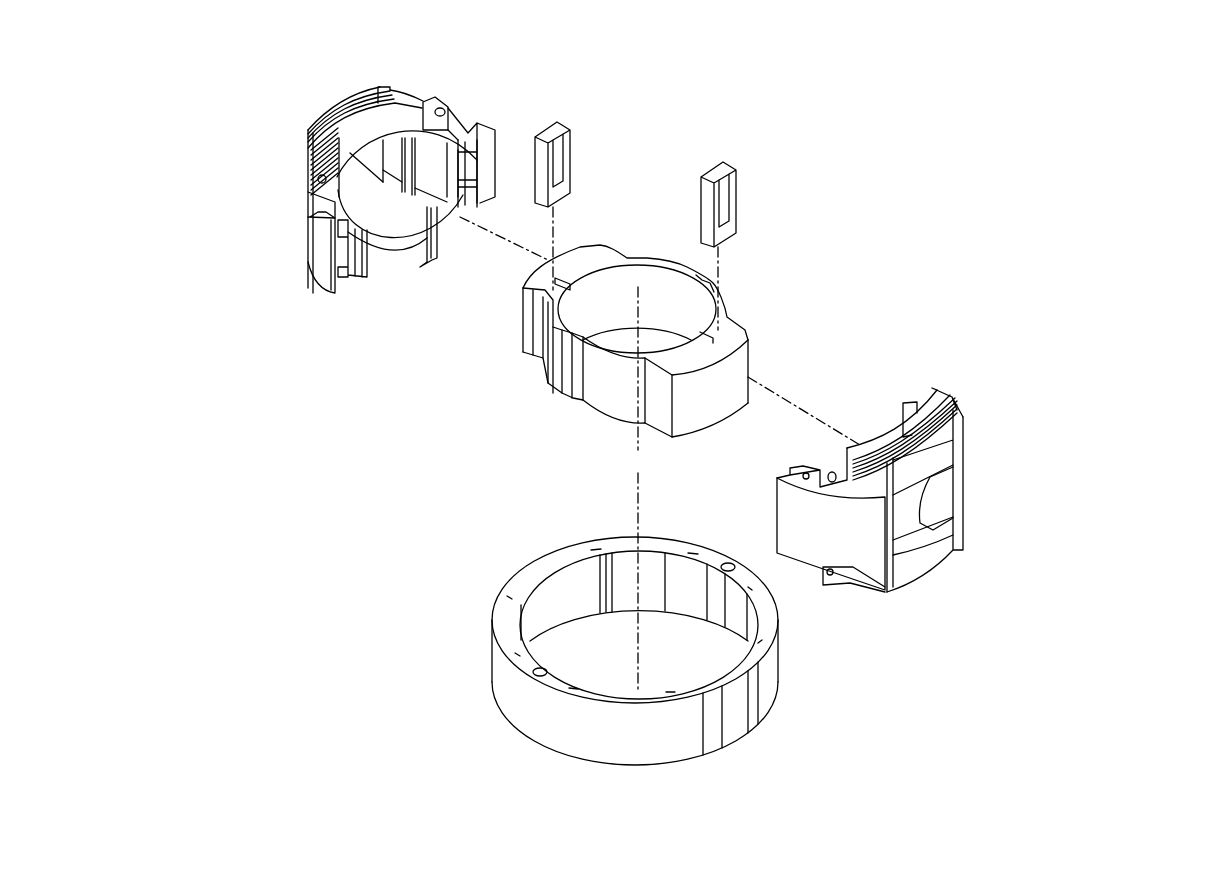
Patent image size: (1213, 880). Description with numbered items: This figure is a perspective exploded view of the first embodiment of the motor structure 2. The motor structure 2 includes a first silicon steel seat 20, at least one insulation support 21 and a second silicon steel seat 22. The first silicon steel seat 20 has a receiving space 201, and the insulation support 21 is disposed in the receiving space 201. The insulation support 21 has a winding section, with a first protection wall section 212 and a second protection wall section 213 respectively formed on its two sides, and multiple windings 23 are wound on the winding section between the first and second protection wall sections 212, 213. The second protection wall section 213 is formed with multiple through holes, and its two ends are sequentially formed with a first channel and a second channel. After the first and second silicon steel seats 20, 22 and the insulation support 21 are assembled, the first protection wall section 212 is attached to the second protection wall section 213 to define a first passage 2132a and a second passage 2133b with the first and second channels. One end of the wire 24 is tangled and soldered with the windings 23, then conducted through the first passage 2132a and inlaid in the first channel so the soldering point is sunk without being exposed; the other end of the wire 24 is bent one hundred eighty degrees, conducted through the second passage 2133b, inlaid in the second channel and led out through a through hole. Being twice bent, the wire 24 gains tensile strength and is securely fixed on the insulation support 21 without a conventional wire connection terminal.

The motor structure 2 is at (1053, 194).
The first silicon steel seat 20 is at (770, 680).
The receiving space 201 is at (570, 603).
The insulation support 21 is at (982, 481).
The first protection wall section 212 is at (306, 213).
The first passage 2132a is at (305, 197).
The second passage 2133b is at (305, 193).
The second protection wall section 213 is at (470, 126).
The second silicon steel seat 22 is at (740, 360).
The windings 23 is at (950, 404).
The wire 24 is at (447, 113).